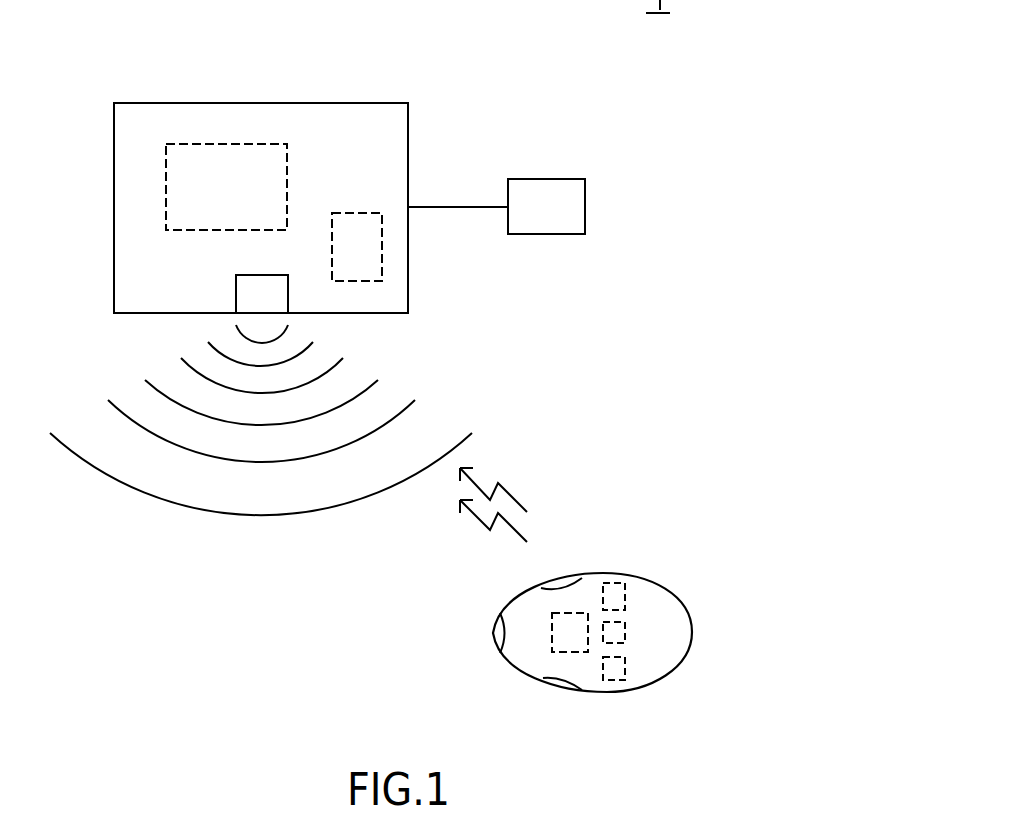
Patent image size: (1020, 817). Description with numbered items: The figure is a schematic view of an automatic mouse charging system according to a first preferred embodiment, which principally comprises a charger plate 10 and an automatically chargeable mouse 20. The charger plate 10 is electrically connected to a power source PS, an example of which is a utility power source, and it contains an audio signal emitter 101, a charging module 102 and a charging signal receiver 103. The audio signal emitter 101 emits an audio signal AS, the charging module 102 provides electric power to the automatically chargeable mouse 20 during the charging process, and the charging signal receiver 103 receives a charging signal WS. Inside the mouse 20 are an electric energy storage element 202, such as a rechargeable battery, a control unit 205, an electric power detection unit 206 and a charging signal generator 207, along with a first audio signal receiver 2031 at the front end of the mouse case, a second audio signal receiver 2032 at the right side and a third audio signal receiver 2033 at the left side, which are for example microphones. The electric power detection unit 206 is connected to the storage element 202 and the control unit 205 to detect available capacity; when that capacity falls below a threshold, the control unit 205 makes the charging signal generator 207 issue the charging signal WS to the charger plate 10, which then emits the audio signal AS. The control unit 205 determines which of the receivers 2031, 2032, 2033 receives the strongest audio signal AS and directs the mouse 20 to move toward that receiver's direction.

The charger plate 10 is at (338, 100).
The audio signal emitter 101 is at (260, 297).
The charging module 102 is at (211, 157).
The charging signal receiver 103 is at (367, 247).
The power source PS is at (545, 189).
The audio signal AS is at (97, 472).
The charging signal WS is at (512, 493).
The automatically chargeable mouse 20 is at (683, 660).
The first audio signal receiver 2031 is at (495, 632).
The second audio signal receiver 2032 is at (558, 582).
The third audio signal receiver 2033 is at (553, 683).
The control unit 205 is at (560, 635).
The electric energy storage element 202 is at (617, 600).
The electric power detection unit 206 is at (610, 635).
The charging signal generator 207 is at (618, 667).